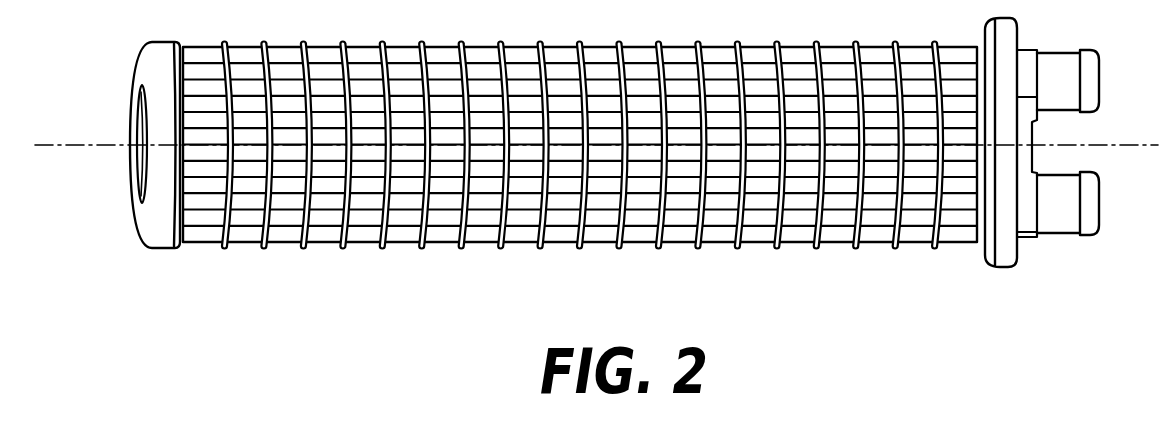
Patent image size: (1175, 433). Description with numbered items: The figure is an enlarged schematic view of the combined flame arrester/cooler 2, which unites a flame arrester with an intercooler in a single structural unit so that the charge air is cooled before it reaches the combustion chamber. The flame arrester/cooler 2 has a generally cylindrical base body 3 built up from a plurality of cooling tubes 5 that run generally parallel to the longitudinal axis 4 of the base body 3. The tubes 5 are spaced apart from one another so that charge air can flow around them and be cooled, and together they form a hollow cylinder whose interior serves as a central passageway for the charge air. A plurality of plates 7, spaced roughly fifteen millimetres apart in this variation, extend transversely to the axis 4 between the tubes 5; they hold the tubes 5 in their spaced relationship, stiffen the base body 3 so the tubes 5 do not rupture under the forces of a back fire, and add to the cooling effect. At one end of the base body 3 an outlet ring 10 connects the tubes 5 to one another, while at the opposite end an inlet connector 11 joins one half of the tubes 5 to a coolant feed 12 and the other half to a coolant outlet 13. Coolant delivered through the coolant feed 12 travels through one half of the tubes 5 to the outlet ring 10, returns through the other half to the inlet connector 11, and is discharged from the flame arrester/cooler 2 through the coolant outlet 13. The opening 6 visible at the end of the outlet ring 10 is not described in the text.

The flame arrester/cooler 2 is at (580, 188).
The base body 3 is at (438, 243).
The axis 4 is at (1147, 146).
The tubes 5 is at (370, 222).
The opening 6 is at (133, 193).
The plates 7 is at (775, 247).
The outlet ring 10 is at (157, 248).
The inlet connector 11 is at (998, 267).
The coolant feed 12 is at (1100, 78).
The coolant outlet 13 is at (1067, 233).